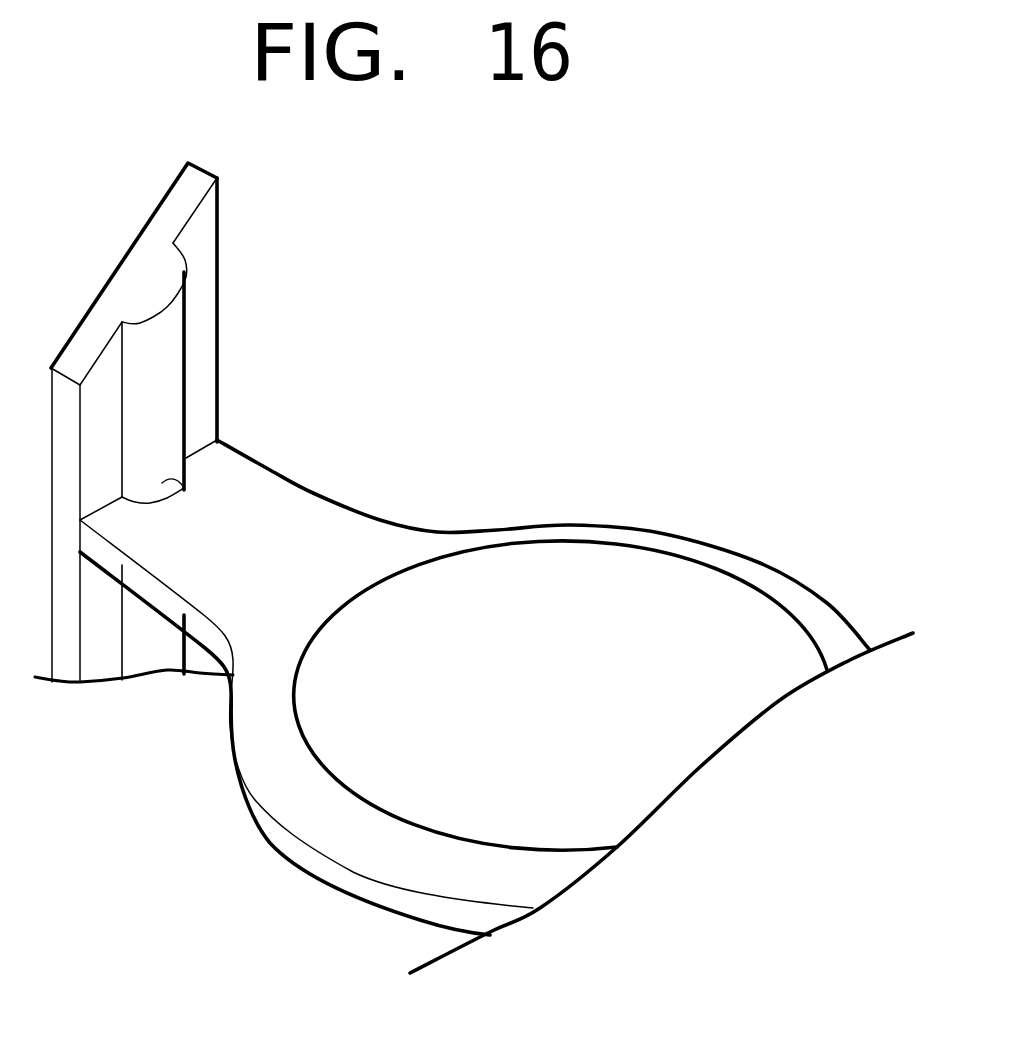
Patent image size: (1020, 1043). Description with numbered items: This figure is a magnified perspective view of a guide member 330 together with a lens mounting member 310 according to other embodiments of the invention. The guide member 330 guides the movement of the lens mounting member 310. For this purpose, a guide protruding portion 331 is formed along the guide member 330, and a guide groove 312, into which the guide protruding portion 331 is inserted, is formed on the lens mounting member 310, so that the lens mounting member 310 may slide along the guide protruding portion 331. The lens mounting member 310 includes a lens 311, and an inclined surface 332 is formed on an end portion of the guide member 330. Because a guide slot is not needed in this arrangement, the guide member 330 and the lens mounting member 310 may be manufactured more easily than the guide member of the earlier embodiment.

The lens mounting member 310 is at (363, 837).
The lens 311 is at (677, 597).
The guide groove 312 is at (186, 490).
The guide member 330 is at (207, 355).
The guide protruding portion 331 is at (173, 403).
The inclined surface 332 is at (180, 207).